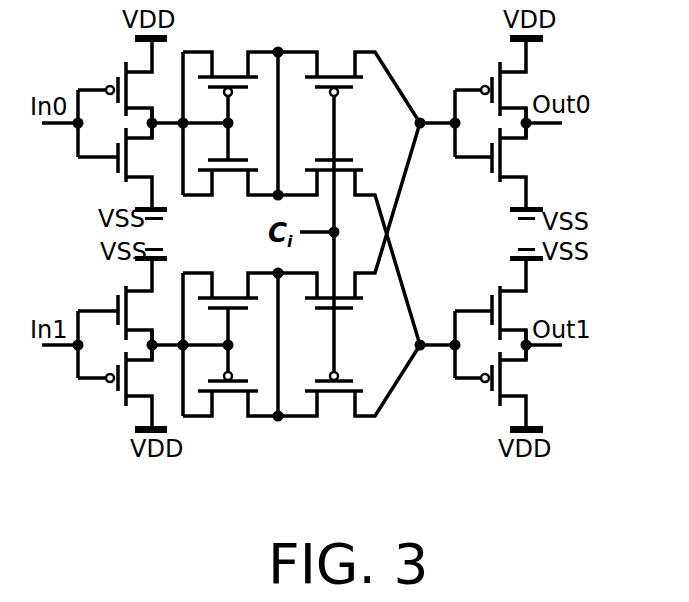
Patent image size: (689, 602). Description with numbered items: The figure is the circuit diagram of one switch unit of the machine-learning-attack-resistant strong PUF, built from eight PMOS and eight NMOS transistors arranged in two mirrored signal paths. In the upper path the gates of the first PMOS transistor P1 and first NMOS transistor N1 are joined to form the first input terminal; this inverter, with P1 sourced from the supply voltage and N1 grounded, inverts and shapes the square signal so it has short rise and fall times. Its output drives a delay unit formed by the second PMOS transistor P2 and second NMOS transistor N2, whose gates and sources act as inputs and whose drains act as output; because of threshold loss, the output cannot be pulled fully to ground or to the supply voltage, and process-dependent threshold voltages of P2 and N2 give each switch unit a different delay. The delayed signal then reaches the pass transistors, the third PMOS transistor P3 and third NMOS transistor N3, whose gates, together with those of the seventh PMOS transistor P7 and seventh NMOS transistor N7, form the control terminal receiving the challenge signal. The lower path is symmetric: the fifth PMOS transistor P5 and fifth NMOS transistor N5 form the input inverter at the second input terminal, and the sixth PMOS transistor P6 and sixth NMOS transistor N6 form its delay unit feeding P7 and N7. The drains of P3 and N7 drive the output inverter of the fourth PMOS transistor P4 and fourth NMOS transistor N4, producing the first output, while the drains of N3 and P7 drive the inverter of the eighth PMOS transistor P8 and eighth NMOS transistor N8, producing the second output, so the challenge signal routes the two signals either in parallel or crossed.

The first PMOS transistor P1 is at (120, 90).
The first NMOS transistor N1 is at (119, 159).
The second PMOS transistor P2 is at (228, 62).
The second NMOS transistor N2 is at (228, 192).
The third PMOS transistor P3 is at (340, 99).
The third NMOS transistor N3 is at (341, 153).
The fourth PMOS transistor P4 is at (496, 90).
The fourth NMOS transistor N4 is at (495, 158).
The fifth PMOS transistor P5 is at (119, 378).
The fifth NMOS transistor N5 is at (119, 309).
The sixth PMOS transistor P6 is at (228, 409).
The sixth NMOS transistor N6 is at (228, 279).
The seventh PMOS transistor P7 is at (340, 374).
The seventh NMOS transistor N7 is at (341, 320).
The eighth PMOS transistor P8 is at (497, 379).
The eighth NMOS transistor N8 is at (494, 309).